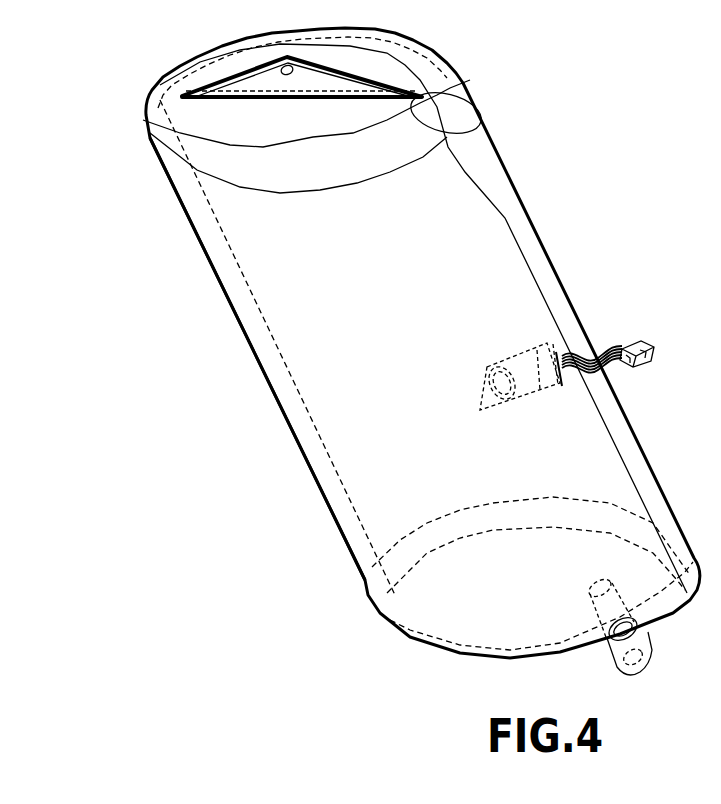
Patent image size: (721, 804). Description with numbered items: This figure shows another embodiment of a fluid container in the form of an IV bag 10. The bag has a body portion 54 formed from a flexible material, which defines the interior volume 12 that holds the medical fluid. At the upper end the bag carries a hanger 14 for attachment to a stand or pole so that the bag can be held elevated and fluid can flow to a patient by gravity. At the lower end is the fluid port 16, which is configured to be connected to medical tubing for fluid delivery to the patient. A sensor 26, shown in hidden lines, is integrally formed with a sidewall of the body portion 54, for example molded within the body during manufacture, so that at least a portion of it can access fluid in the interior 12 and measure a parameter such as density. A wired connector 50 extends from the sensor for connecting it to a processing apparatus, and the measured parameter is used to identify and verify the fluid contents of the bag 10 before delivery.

The IV bag 10 is at (367, 359).
The interior volume 12 is at (435, 342).
The hanger 14 is at (457, 94).
The fluid port 16 is at (651, 660).
The sensor 26 is at (502, 357).
The wired connector 50 is at (603, 360).
The body portion 54 is at (260, 367).